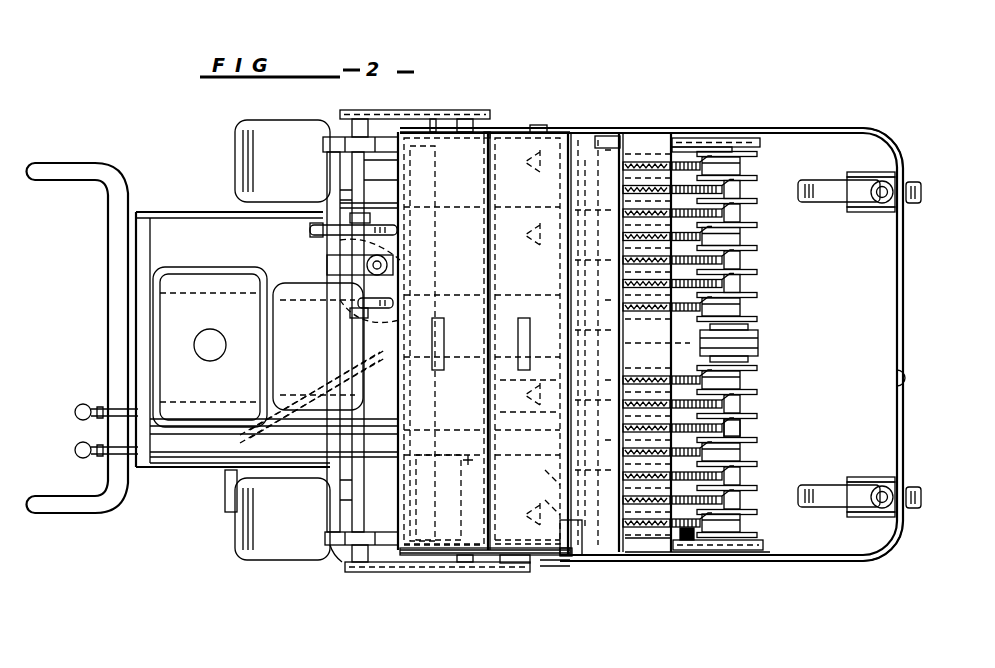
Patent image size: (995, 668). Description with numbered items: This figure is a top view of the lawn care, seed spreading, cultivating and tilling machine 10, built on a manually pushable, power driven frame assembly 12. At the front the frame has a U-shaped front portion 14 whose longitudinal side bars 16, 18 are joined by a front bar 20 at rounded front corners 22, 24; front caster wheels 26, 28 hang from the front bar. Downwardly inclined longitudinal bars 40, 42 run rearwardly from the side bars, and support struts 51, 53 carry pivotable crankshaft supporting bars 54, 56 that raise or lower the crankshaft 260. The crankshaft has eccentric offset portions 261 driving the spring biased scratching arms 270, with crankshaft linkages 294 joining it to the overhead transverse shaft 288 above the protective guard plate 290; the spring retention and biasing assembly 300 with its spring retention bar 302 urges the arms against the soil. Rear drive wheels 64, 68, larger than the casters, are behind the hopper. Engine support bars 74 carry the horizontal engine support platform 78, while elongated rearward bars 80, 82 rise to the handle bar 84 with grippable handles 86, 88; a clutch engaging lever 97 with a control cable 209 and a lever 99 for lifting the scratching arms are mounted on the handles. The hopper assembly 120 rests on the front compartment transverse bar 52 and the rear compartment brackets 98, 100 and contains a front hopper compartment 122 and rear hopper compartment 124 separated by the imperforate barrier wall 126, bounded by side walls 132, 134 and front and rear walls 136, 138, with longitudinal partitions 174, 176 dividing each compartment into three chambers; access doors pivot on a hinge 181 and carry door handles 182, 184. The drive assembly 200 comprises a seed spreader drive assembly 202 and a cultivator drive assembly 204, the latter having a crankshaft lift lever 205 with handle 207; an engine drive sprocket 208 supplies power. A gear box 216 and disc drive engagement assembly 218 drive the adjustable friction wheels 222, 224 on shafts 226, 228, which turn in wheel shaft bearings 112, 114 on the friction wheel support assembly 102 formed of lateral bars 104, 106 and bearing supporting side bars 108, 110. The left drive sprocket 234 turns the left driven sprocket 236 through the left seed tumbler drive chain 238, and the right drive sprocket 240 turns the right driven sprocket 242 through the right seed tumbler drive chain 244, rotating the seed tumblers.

The lawn care, seed spreading, cultivating, and tilling apparatus and machine 10 is at (787, 101).
The frame assembly 12 is at (805, 565).
The U-shaped front portion 14 is at (897, 293).
The longitudinal side bar 16 is at (815, 126).
The longitudinal side bar 18 is at (852, 560).
The front bar 20 is at (895, 385).
The front corner 22 is at (880, 134).
The front corner 24 is at (895, 545).
The front caster wheel 26 is at (812, 485).
The front caster wheel 28 is at (818, 205).
The downwardly inclined longitudinal bar 40 is at (510, 132).
The downwardly inclined longitudinal bar 42 is at (517, 575).
The support strut 51 is at (540, 125).
The front compartment transverse bar 52 is at (545, 488).
The support strut 53 is at (560, 573).
The pivotable crankshaft supporting bar 54 is at (660, 125).
The pivotable crankshaft supporting bar 56 is at (648, 560).
The rear drive wheel 64 is at (235, 146).
The rear drive wheel 68 is at (235, 546).
The engine support bar 74 is at (280, 410).
The engine support platform 78 is at (200, 267).
The elongated rearward bar 80 is at (171, 210).
The elongated rearward bar 82 is at (155, 468).
The handle bar 84 is at (118, 370).
The manually grippable handle 86 is at (72, 163).
The manually grippable handle 88 is at (67, 513).
The clutch engaging lever 97 is at (98, 455).
The upright rear compartment bracket 98 is at (385, 120).
The lever 99 is at (95, 415).
The upright rear compartment bracket 100 is at (385, 575).
The friction wheel support assembly 102 is at (327, 525).
The front lateral bar 104 is at (325, 171).
The rear lateral bar 106 is at (395, 179).
The bearing supporting side bar 108 is at (330, 137).
The bearing supporting side bar 110 is at (330, 560).
The wheel shaft bearing 112 is at (368, 137).
The wheel shaft bearing 114 is at (367, 575).
The hopper assembly 120 is at (577, 147).
The front hopper compartment 122 is at (498, 535).
The rear hopper compartment 124 is at (460, 545).
The intermediate transverse barrier wall 126 is at (495, 259).
The vertical side wall 132 is at (490, 133).
The vertical side wall 134 is at (435, 555).
The front wall 136 is at (560, 522).
The rear wall 138 is at (398, 405).
The longitudinal imperforate partition 174 is at (470, 212).
The longitudinal imperforate partition 176 is at (472, 460).
The hinge 181 is at (492, 398).
The door handle 182 is at (517, 320).
The door handle 184 is at (445, 356).
The drive assembly 200 is at (165, 318).
The seed spreader drive assembly 202 is at (511, 586).
The cultivator drive assembly 204 is at (765, 380).
The crankshaft lift lever 205 is at (205, 466).
The handle 207 is at (233, 512).
The engine drive sprocket 208 is at (285, 400).
The control cable 209 is at (372, 365).
The gear box 216 is at (295, 283).
The disc drive engagement assembly 218 is at (475, 245).
The left friction wheel 222 is at (310, 228).
The right friction wheel 224 is at (393, 302).
The left friction wheel drive shaft 226 is at (355, 190).
The right friction wheel drive shaft 228 is at (340, 496).
The left drive sprocket 234 is at (340, 112).
The left driven sprocket 236 is at (487, 110).
The left seed tumbler drive chain 238 is at (430, 111).
The right drive sprocket 240 is at (340, 576).
The right driven sprocket 242 is at (560, 580).
The right seed tumbler drive chain 244 is at (437, 560).
The crankshaft 260 is at (745, 340).
The eccentric offset scratching arm-engaging portion 261 is at (755, 421).
The scratching arm 270 is at (587, 157).
The overhead transverse shaft 288 is at (607, 135).
The protective guard plate 290 is at (677, 150).
The crankshaft linkage 294 is at (747, 553).
The spring retention and biasing assembly 300 is at (688, 530).
The spring retention bar 302 is at (600, 328).